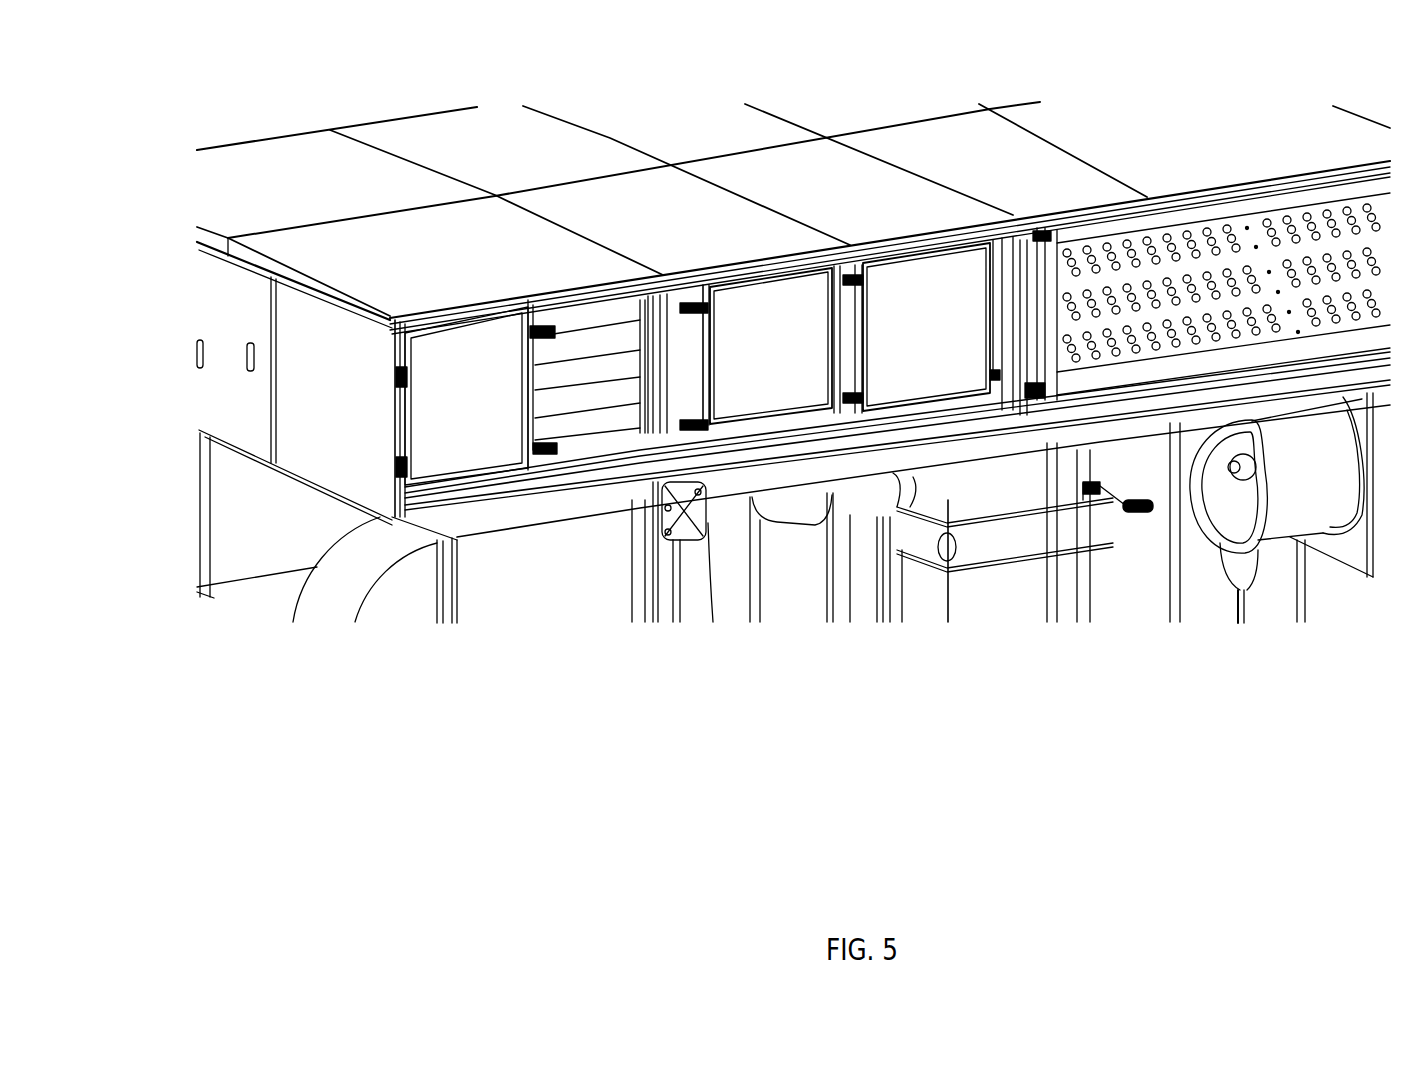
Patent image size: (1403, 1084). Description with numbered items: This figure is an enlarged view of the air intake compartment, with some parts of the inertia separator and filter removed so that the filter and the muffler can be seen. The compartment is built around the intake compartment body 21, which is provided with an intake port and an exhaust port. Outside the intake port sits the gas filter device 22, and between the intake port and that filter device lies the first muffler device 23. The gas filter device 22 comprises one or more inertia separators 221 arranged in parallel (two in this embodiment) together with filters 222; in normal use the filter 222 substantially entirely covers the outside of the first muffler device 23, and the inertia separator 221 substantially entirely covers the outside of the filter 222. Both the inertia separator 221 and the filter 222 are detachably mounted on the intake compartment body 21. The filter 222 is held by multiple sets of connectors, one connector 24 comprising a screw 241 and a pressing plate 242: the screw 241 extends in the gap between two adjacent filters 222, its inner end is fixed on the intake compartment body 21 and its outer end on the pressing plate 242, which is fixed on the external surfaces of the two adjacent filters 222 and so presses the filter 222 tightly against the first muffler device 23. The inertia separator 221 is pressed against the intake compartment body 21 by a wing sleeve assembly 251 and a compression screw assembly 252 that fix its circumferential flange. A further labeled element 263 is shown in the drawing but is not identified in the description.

The intake compartment body 21 is at (1322, 118).
The gas filter device 22 is at (1245, 785).
The first muffler device 23 is at (558, 405).
The connector 24 is at (760, 703).
The screw 241 is at (659, 407).
The pressing plate 242 is at (714, 434).
The lower rail 263 is at (812, 464).
The filter 222 is at (945, 370).
The inertia separator 221 is at (1193, 366).
The wing sleeve assembly 251 is at (1035, 436).
The compression screw assembly 252 is at (1039, 238).